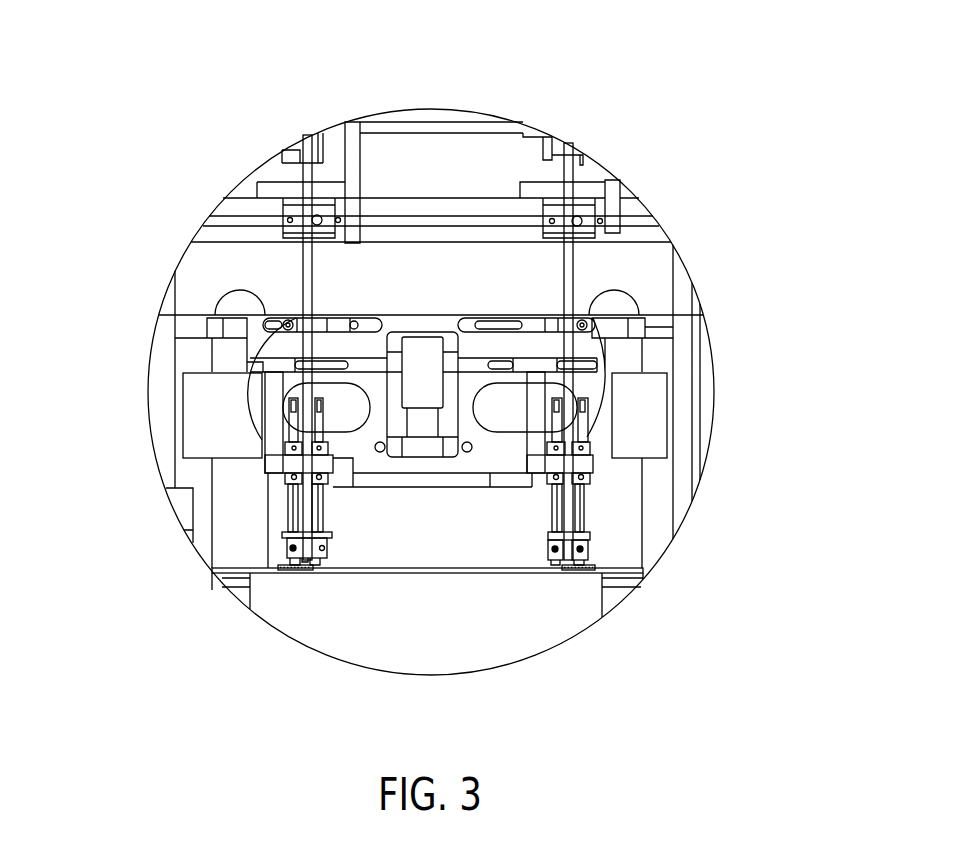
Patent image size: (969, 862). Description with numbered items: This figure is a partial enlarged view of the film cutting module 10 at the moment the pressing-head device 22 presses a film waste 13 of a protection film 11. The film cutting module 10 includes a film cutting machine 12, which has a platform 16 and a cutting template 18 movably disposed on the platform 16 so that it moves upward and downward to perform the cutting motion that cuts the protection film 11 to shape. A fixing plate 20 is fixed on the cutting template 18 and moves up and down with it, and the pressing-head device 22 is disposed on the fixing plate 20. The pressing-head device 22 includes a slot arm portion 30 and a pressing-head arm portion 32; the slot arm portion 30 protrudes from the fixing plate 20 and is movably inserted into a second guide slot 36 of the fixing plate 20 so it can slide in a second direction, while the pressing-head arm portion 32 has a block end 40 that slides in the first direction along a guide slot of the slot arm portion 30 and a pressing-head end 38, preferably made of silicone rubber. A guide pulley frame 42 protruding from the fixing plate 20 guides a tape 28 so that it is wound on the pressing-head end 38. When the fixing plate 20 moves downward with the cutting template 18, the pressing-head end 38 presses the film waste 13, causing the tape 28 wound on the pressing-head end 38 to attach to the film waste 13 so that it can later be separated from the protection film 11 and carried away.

The film cutting module 10 is at (630, 82).
The protection film 11 is at (455, 574).
The film cutting machine 12 is at (750, 383).
The film waste 13 is at (298, 571).
The platform 16 is at (617, 596).
The cutting template 18 is at (645, 407).
The fixing plate 20 is at (597, 386).
The pressing-head device 22 is at (76, 232).
The tape 28 is at (307, 507).
The slot arm portion 30 is at (258, 366).
The pressing-head arm portion 32 is at (263, 441).
The second guide slot 36 is at (340, 360).
The pressing-head end 38 is at (326, 550).
The block end 40 is at (275, 385).
The guide pulley frame 42 is at (288, 320).